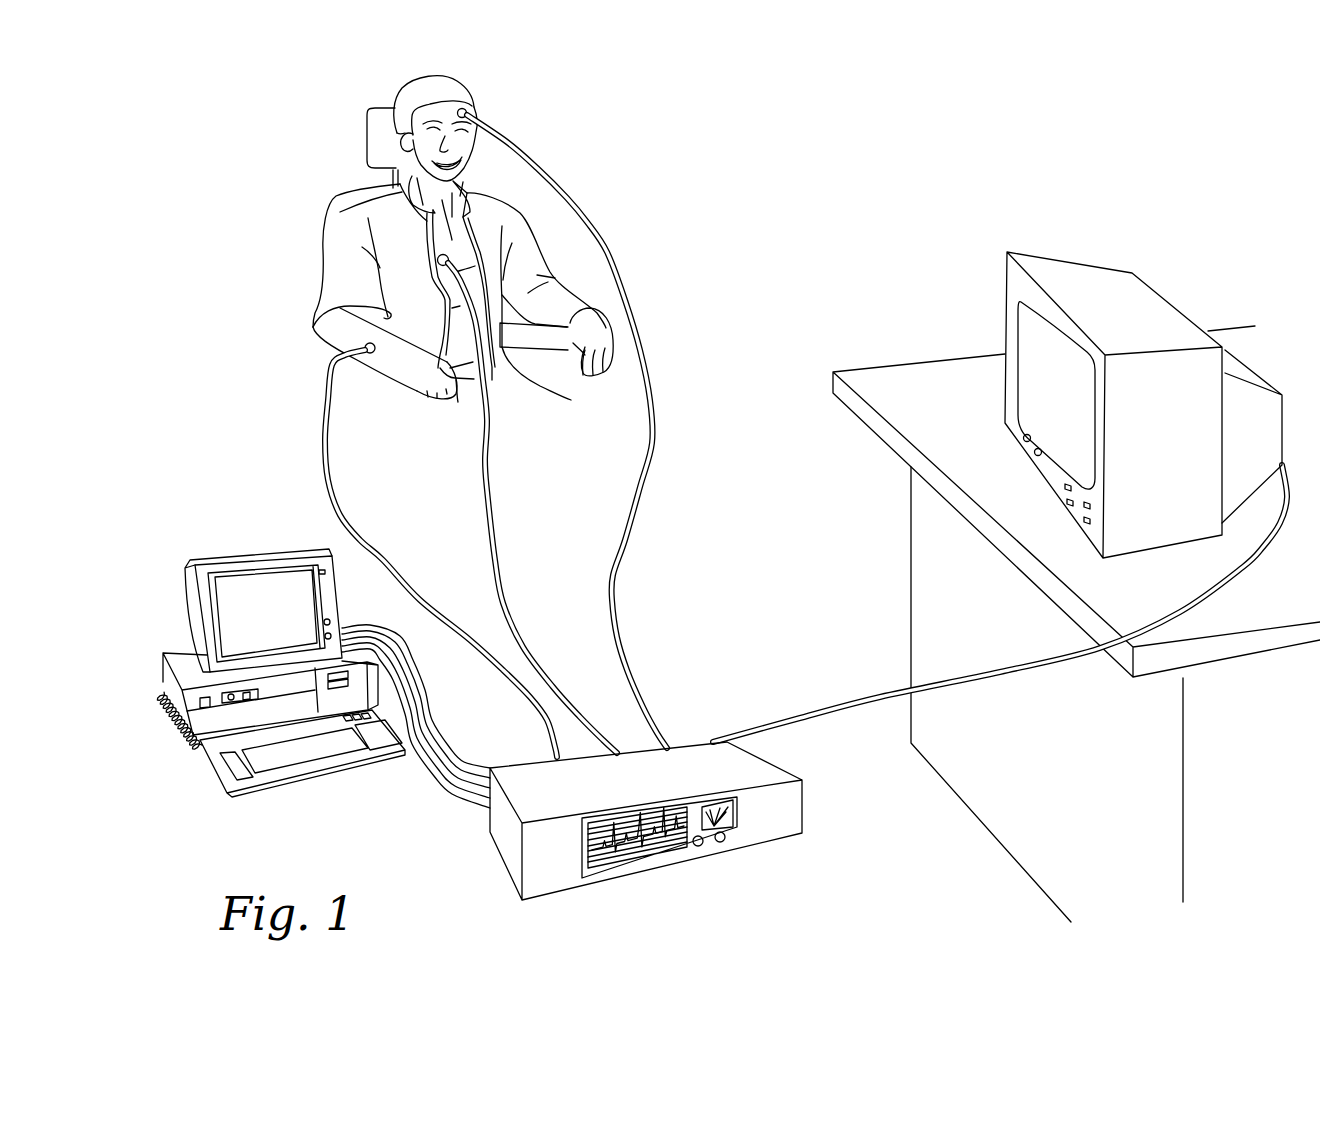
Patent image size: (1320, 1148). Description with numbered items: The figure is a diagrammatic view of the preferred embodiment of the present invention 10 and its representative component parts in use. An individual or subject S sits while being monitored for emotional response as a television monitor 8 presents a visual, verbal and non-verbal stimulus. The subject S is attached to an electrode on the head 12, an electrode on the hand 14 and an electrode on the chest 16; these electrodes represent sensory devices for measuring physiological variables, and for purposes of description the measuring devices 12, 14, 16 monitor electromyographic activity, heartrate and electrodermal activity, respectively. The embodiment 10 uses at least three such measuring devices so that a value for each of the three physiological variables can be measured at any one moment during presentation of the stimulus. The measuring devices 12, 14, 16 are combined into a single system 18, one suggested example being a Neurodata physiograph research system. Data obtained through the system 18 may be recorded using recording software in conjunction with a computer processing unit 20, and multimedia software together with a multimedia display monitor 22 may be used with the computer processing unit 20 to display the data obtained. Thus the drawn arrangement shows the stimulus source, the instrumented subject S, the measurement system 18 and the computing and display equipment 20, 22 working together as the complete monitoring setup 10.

The television monitor 8 is at (1063, 273).
The present invention 10 is at (250, 486).
The electrode on the head 12 is at (507, 137).
The electrode on the hand 14 is at (332, 490).
The electrode on the chest 16 is at (488, 492).
The single system 18 is at (697, 757).
The computer processing unit 20 is at (197, 748).
The multimedia display monitor 22 is at (190, 593).
The subject S is at (348, 268).